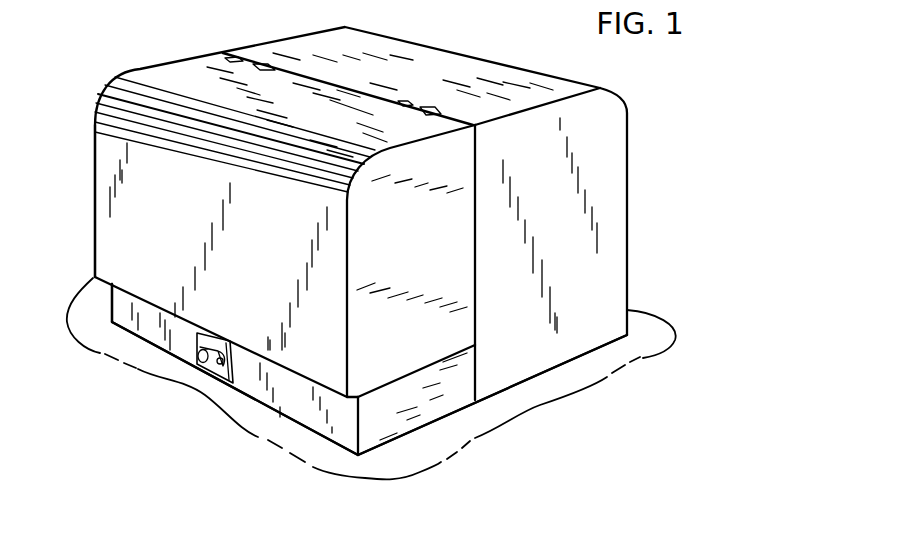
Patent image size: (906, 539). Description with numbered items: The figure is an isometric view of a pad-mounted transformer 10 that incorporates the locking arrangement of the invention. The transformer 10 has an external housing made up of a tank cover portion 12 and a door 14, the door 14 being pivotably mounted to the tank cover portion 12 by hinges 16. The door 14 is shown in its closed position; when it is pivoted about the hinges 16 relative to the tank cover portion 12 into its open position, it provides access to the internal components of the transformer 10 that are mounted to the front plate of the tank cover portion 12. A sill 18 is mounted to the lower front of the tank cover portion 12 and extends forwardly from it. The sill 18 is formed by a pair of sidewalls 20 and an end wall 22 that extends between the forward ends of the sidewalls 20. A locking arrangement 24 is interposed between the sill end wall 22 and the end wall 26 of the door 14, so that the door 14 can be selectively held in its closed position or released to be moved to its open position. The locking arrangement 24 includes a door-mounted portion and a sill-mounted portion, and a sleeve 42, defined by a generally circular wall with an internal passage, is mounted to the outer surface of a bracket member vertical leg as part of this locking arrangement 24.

The pad-mounted transformer 10 is at (708, 145).
The tank cover portion 12 is at (632, 213).
The door 14 is at (93, 188).
The hinges 16 is at (253, 67).
The sill 18 is at (327, 438).
The sidewalls 20 is at (430, 408).
The end wall 22 is at (180, 347).
The locking arrangement 24 is at (202, 377).
The end wall of door 26 is at (107, 253).
The sleeve 42 is at (200, 333).